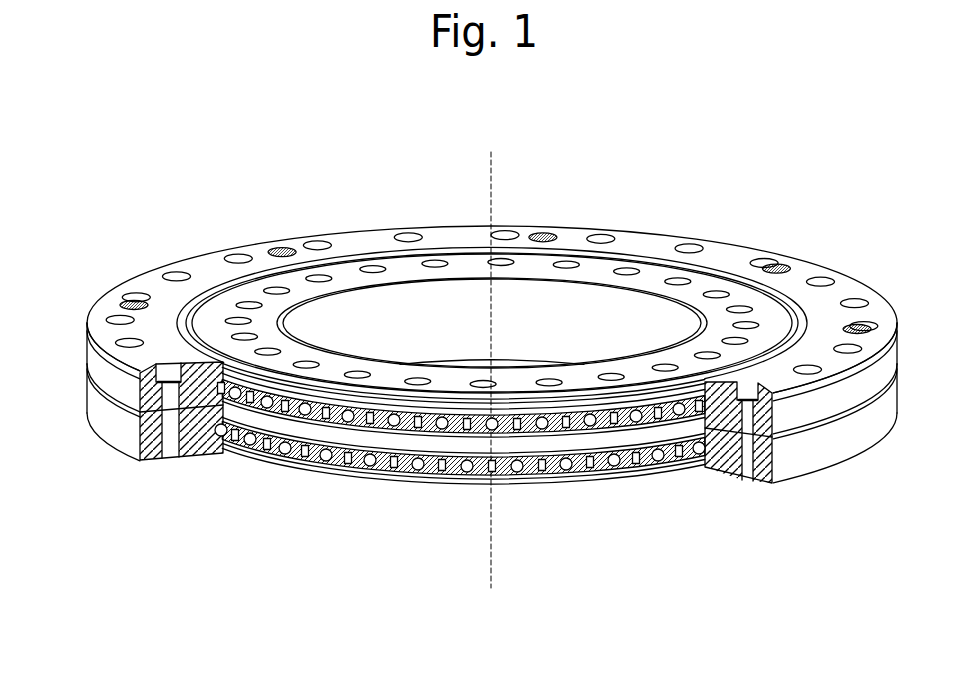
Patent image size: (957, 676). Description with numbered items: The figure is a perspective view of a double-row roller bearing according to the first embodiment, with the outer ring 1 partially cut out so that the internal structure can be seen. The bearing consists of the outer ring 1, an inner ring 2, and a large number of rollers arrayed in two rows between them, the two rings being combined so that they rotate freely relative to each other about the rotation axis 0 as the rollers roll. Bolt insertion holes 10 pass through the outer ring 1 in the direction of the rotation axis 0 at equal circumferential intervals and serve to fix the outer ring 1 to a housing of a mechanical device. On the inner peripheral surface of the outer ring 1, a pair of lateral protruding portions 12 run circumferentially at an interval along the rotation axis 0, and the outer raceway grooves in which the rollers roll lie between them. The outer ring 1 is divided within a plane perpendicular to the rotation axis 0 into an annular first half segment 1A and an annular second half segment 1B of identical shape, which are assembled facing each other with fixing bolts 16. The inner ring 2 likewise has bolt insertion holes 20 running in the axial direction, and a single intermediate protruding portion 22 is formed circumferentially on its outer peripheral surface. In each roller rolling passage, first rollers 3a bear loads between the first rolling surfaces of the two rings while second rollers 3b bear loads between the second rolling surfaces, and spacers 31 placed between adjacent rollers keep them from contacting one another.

The rotation axis 0 is at (491, 357).
The outer ring 1 is at (470, 226).
The first half segment 1A is at (140, 403).
The second half segment 1B is at (151, 455).
The inner ring 2 is at (631, 361).
The first rollers 3a is at (406, 423).
The second rollers 3b is at (468, 428).
The bolt insertion holes 10 is at (318, 241).
The lateral protruding portions 12 is at (243, 488).
The fixing bolts 16 is at (282, 249).
The bolt insertion holes 20 is at (383, 272).
The intermediate protruding portion 22 is at (302, 434).
The spacers 31 is at (518, 398).